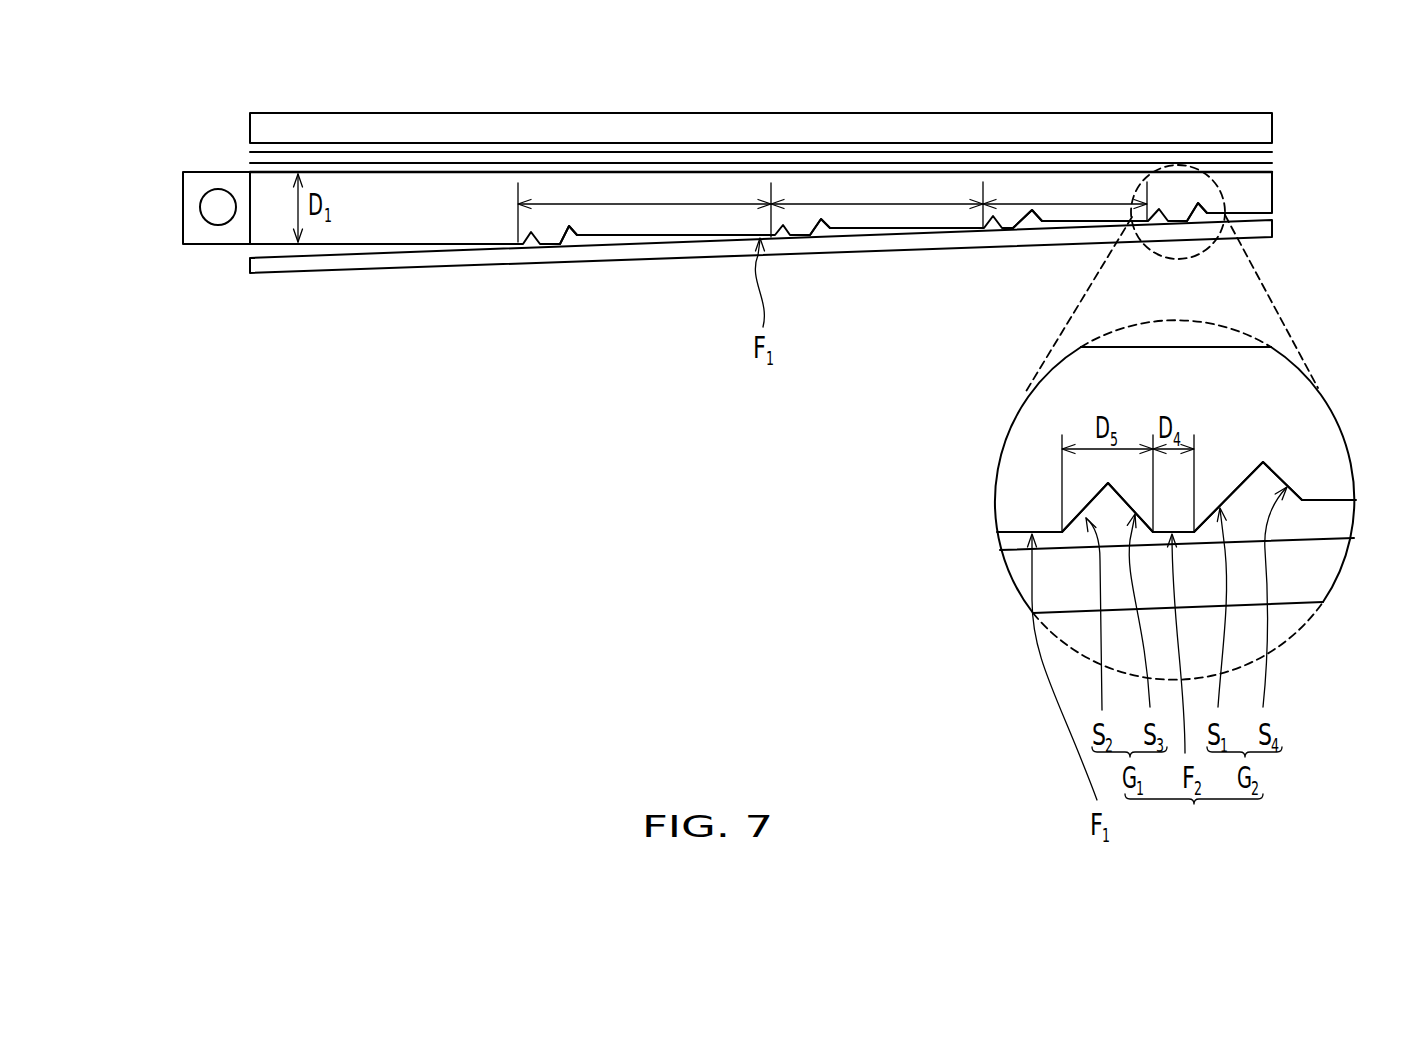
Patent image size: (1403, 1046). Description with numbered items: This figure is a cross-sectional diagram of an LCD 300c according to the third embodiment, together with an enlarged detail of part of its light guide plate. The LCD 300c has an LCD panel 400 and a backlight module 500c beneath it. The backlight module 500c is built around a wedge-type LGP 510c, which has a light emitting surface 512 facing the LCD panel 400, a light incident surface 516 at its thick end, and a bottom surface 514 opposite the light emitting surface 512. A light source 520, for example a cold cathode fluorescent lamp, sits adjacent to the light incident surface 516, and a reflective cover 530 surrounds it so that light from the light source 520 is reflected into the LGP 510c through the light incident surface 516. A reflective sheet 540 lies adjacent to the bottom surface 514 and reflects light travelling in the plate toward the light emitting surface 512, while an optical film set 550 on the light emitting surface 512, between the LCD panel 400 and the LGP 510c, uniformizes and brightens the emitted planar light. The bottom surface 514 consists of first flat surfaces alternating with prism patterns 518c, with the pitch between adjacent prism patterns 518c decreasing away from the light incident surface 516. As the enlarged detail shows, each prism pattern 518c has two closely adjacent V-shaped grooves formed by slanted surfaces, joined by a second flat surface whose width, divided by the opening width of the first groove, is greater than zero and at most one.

The LCD 300c is at (925, 461).
The LCD panel 400 is at (831, 128).
The backlight module 500c is at (107, 128).
The LGP 510c is at (263, 234).
The light emitting surface 512 is at (761, 183).
The bottom surface 514 is at (858, 361).
The light incident surface 516 is at (246, 137).
The prism patterns 518c is at (931, 522).
The light source 520 is at (217, 204).
The reflective cover 530 is at (188, 214).
The reflective sheet 540 is at (252, 263).
The optical film set 550 is at (689, 142).